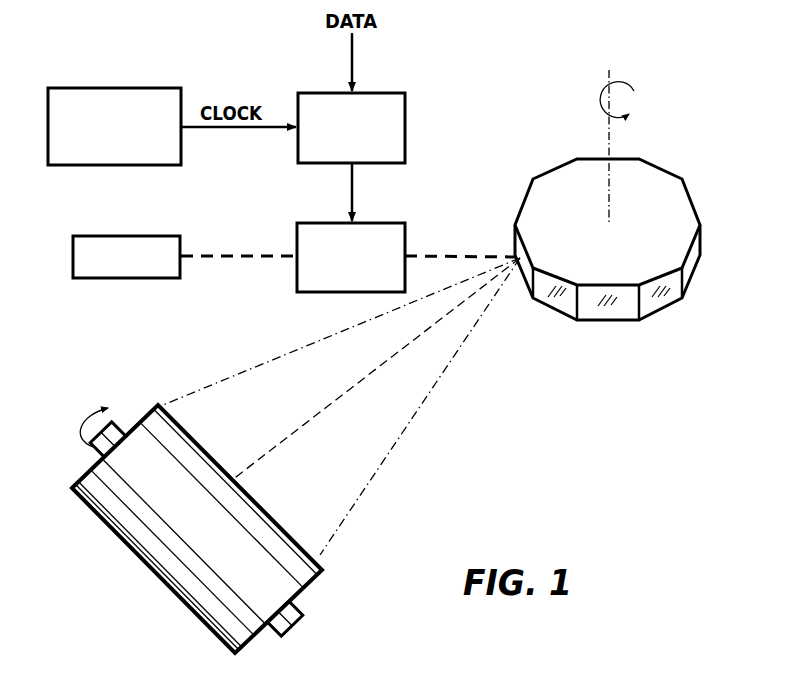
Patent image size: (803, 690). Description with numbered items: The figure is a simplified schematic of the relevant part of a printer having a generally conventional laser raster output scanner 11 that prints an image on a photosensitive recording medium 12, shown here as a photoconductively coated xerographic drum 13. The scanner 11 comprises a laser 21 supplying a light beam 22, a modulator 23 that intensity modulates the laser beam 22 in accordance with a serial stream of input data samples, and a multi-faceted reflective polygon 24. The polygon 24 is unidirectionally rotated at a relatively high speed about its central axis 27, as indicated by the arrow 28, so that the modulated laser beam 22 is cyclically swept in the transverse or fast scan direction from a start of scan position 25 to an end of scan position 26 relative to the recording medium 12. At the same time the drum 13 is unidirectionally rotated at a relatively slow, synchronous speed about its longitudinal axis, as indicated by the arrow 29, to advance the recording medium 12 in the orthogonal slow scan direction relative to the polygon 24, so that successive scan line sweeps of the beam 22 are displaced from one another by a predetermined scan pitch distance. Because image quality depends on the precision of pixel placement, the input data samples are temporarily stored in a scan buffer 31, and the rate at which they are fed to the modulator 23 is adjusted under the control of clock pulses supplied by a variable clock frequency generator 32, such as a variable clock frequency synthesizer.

The laser raster output scanner 11 is at (477, 356).
The photosensitive recording medium 12 is at (205, 582).
The xerographic drum 13 is at (125, 547).
The laser 21 is at (98, 236).
The laser light beam 22 is at (228, 254).
The modulator 23 is at (323, 293).
The multi-faceted reflective polygon 24 is at (680, 176).
The start of scan position 25 is at (163, 405).
The end of scan position 26 is at (317, 560).
The central axis 27 is at (611, 72).
The arrow 28 is at (597, 103).
The arrow 29 is at (88, 420).
The scan buffer 31 is at (406, 109).
The variable clock frequency generator 32 is at (75, 88).